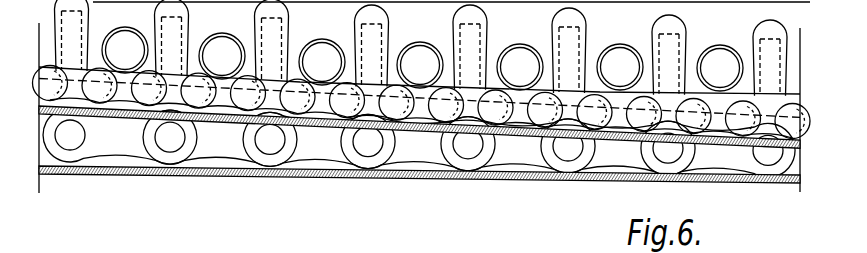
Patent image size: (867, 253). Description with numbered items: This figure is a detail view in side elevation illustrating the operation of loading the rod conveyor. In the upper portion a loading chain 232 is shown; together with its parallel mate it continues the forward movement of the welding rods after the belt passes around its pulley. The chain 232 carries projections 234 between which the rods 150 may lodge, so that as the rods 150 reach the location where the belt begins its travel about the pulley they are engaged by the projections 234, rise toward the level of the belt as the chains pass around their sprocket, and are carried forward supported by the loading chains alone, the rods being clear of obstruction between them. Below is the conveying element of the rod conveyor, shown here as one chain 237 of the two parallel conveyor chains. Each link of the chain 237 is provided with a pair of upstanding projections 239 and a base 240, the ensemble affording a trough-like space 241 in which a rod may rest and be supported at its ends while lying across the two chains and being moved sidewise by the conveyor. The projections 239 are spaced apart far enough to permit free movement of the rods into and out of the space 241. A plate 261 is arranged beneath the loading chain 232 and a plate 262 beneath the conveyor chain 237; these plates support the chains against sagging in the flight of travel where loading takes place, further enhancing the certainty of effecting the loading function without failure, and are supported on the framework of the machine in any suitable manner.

The rod 150 is at (340, 27).
The trough-like space 241 is at (415, 27).
The projection 234 is at (486, 13).
The upstanding projection 239 is at (657, 32).
The base 240 is at (692, 80).
The plate 261 is at (111, 116).
The chain 232 is at (413, 113).
The plate 262 is at (338, 177).
The chain 237 is at (513, 157).